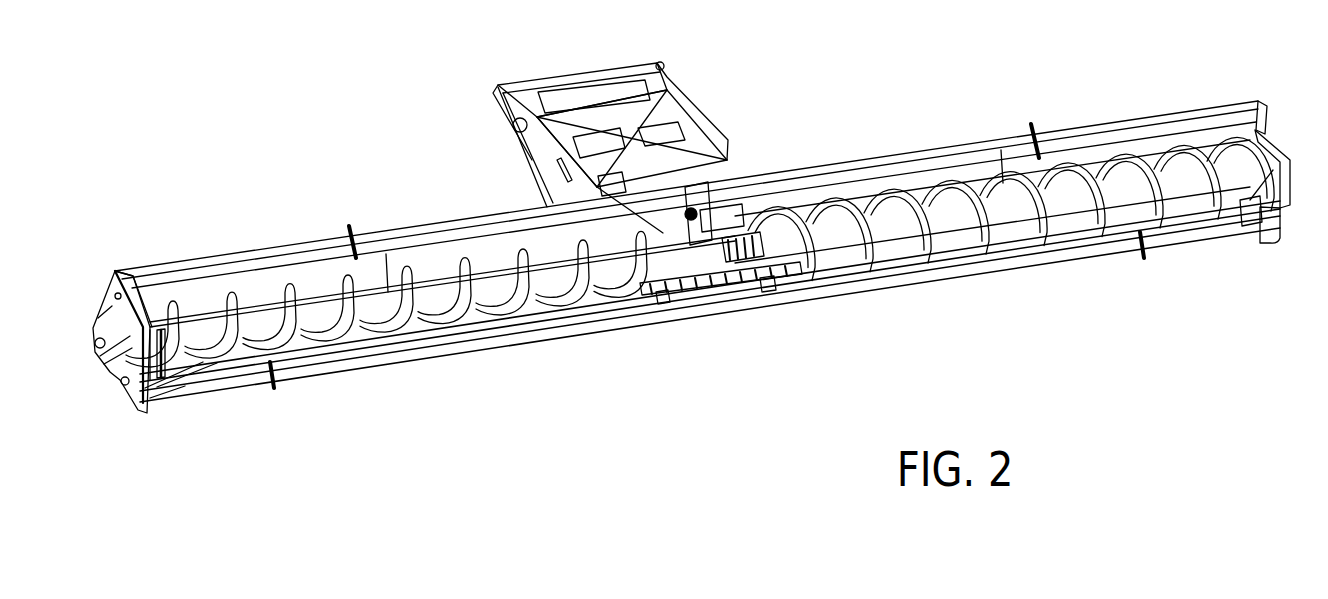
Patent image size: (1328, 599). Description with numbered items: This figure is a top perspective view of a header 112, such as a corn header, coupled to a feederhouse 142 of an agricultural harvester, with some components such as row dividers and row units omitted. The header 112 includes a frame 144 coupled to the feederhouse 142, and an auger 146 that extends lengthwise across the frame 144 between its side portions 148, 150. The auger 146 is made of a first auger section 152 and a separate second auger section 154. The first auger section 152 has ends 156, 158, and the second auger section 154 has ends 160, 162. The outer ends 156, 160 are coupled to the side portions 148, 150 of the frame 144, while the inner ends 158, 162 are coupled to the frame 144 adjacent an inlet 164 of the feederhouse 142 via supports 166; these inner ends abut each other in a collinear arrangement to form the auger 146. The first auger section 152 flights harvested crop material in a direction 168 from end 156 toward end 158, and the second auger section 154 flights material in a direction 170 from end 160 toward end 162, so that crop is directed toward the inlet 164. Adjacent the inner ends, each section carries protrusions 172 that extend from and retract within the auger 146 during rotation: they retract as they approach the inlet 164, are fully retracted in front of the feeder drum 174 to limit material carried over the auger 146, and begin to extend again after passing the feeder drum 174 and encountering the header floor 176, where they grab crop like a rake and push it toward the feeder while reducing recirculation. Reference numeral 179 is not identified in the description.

The header 112 is at (853, 144).
The feederhouse 142 is at (686, 90).
The frame 144 is at (237, 250).
The auger 146 is at (700, 278).
The side portion 148 is at (110, 374).
The side portion 150 is at (1278, 133).
The first auger section 152 is at (368, 355).
The second auger section 154 is at (958, 236).
The end 156 is at (174, 322).
The end 158 is at (710, 294).
The end 160 is at (1243, 208).
The end 162 is at (733, 300).
The inlet 164 is at (653, 300).
The supports 166 is at (700, 200).
The direction 168 is at (330, 437).
The direction 170 is at (1127, 307).
The protrusions 172 is at (662, 300).
The feeder drum 174 is at (568, 178).
The header floor 176 is at (891, 262).
The paddle 179 is at (524, 318).